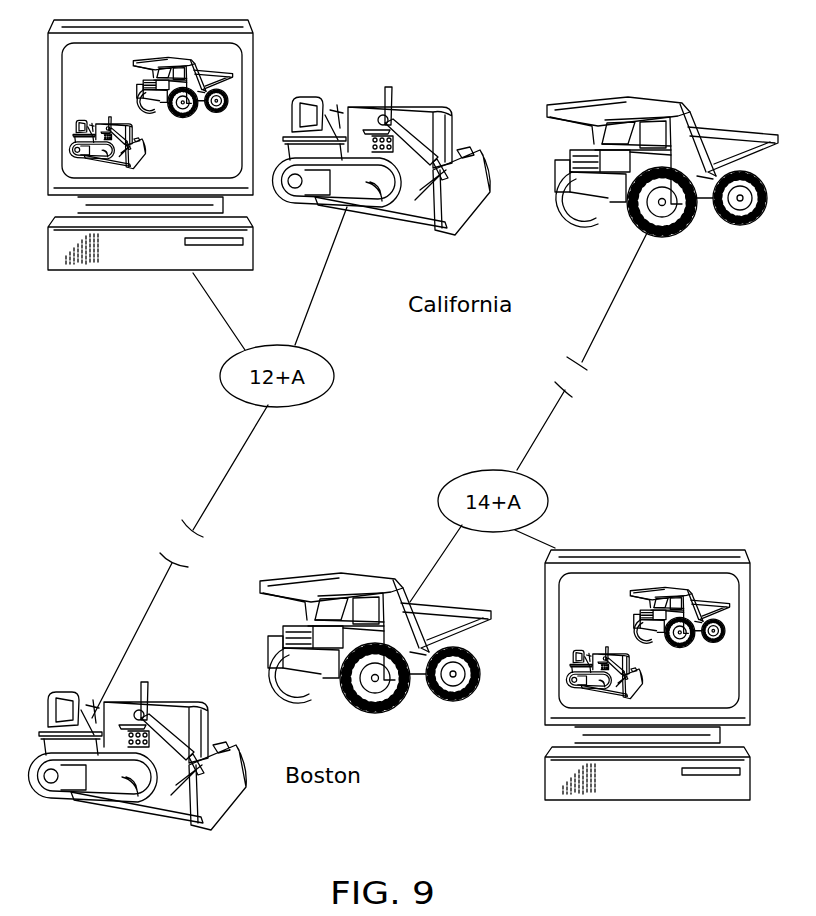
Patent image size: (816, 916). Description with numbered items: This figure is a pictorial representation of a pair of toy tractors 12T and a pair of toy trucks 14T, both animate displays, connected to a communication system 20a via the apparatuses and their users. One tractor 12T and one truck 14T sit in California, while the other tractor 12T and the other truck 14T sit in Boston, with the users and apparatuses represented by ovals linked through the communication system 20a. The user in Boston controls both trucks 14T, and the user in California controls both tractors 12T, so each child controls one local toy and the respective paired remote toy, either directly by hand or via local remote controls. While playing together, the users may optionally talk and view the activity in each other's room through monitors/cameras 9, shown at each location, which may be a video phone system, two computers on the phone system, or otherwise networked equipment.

The monitors/cameras 9 is at (48, 243).
The toy tractors 12T is at (470, 105).
The toy trucks 14T is at (733, 222).
The communication system 20a is at (178, 547).